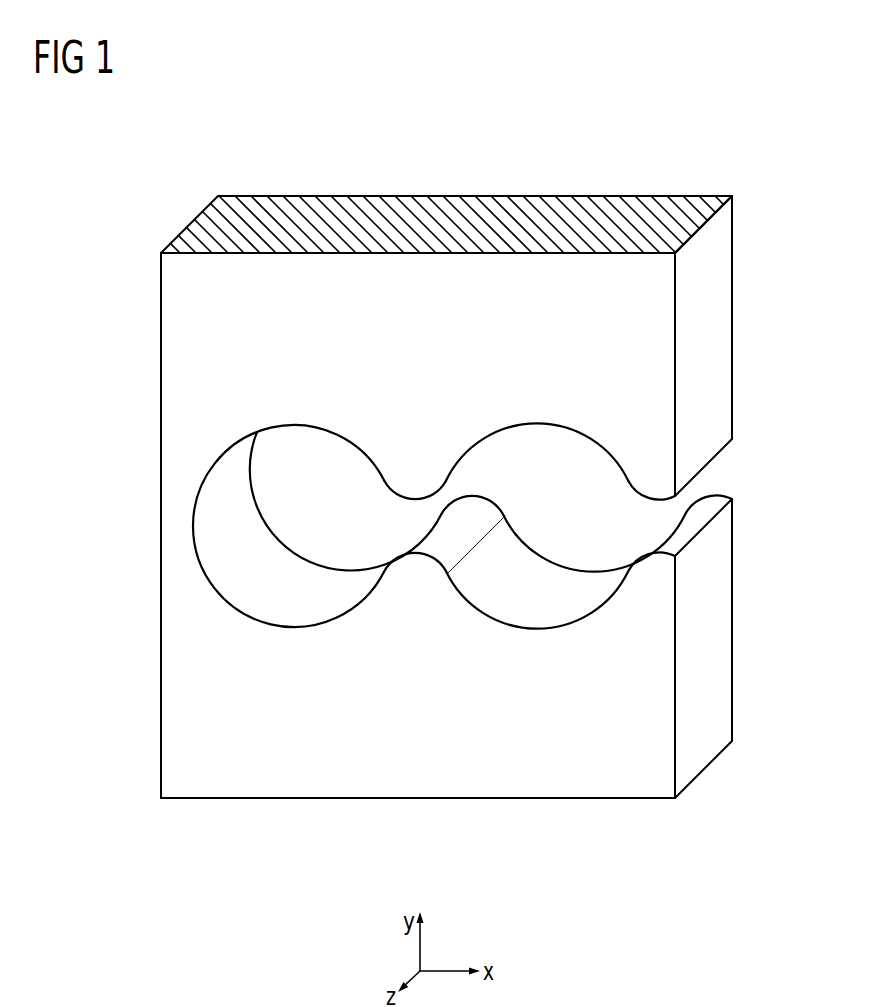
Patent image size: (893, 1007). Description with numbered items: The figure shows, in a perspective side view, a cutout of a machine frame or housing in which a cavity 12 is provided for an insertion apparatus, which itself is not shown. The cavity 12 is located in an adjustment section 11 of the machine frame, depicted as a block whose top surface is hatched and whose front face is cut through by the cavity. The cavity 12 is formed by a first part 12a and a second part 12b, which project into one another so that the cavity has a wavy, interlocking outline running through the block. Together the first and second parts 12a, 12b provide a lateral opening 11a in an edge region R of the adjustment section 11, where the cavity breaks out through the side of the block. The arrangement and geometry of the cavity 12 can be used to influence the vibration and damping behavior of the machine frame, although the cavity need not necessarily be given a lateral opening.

The adjustment section 11 is at (263, 398).
The lateral opening 11a is at (732, 473).
The cavity 12 is at (503, 462).
The first part 12a is at (300, 440).
The second part 12b is at (542, 440).
The edge region R is at (642, 592).